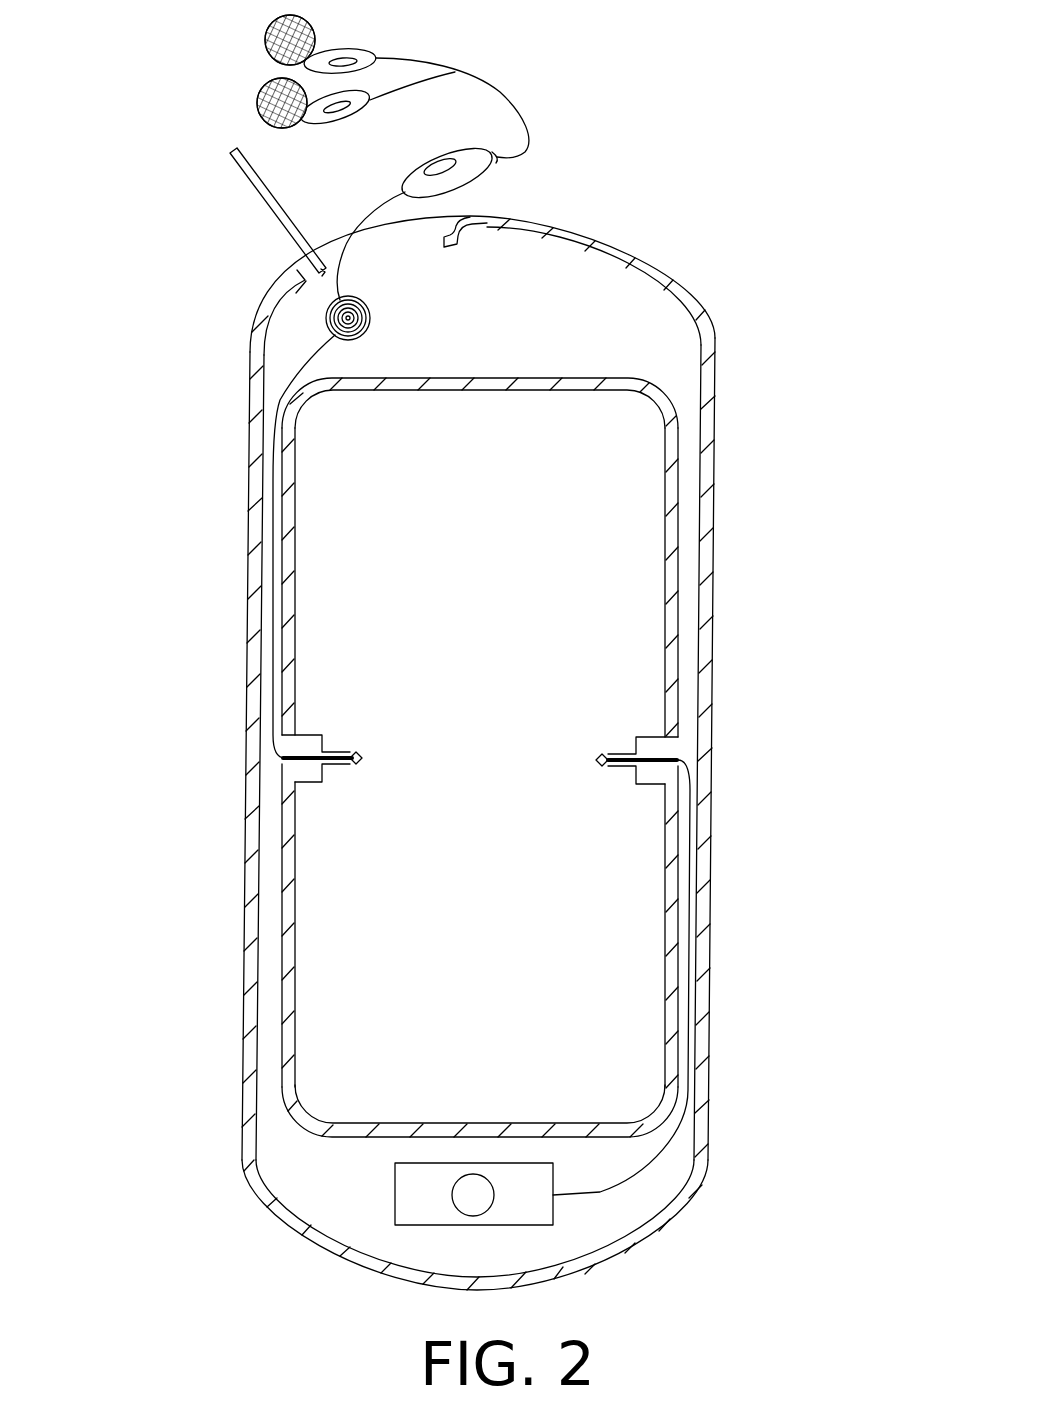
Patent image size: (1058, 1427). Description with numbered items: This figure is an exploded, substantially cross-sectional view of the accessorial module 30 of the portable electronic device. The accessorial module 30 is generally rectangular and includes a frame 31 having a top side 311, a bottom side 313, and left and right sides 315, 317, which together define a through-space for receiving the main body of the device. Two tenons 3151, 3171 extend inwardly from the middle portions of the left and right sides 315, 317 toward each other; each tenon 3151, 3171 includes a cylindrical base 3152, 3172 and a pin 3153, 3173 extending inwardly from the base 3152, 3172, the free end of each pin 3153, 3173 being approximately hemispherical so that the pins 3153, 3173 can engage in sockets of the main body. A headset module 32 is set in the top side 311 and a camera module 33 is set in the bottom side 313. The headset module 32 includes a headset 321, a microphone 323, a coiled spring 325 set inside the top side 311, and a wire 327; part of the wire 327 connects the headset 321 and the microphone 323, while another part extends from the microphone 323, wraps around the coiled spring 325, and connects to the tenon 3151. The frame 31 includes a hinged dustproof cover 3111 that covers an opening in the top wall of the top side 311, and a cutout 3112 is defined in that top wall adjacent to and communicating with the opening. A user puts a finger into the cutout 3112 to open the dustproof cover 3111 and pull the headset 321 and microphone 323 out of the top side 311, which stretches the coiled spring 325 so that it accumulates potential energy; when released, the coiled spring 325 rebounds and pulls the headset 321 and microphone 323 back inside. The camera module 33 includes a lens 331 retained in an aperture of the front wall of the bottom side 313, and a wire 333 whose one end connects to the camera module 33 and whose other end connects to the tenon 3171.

The accessorial module 30 is at (545, 75).
The frame 31 is at (487, 737).
The top side 311 is at (660, 346).
The hinged dustproof cover 3111 is at (257, 193).
The cutout 3112 is at (468, 216).
The bottom side 313 is at (329, 1203).
The left side 315 is at (267, 580).
The tenon 3151 is at (199, 717).
The cylindrical base 3152 is at (313, 745).
The pin 3153 is at (355, 752).
The right side 317 is at (697, 612).
The tenon 3171 is at (767, 732).
The cylindrical base 3172 is at (650, 746).
The pin 3173 is at (603, 756).
The headset module 32 is at (283, 386).
The headset 321 is at (265, 50).
The microphone 323 is at (408, 183).
The coiled spring 325 is at (330, 312).
The wire 327 is at (259, 475).
The camera module 33 is at (620, 1047).
The lens 331 is at (477, 1197).
The wire 333 is at (685, 997).